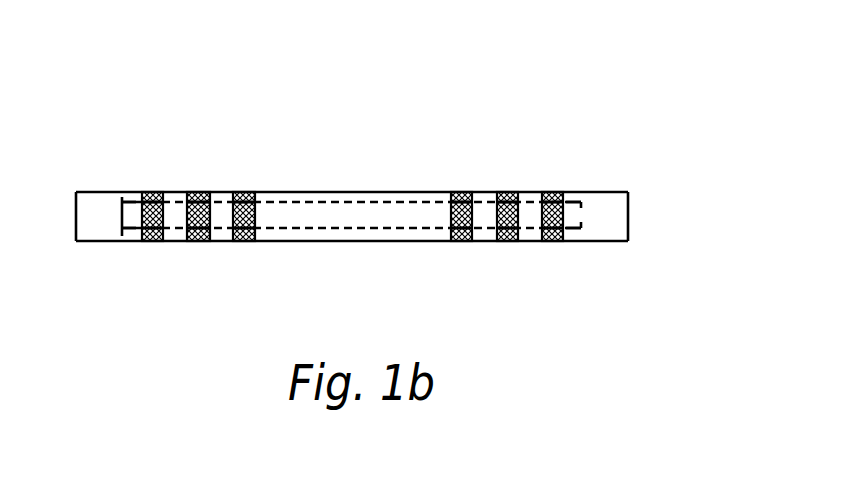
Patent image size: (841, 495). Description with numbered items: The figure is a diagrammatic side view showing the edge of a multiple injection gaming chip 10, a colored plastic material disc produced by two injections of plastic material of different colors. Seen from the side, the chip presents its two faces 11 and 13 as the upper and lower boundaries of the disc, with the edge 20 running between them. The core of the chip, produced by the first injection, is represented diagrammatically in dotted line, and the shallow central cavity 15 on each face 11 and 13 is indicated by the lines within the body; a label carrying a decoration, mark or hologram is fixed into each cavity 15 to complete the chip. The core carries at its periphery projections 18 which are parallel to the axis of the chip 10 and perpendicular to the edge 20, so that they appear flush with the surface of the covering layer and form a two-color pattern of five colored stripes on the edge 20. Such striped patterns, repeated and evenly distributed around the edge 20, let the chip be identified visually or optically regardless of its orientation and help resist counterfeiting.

The multiple injection gaming chip 10 is at (443, 135).
The face 11 is at (110, 192).
The face 13 is at (109, 243).
The shallow central cavity 15 is at (360, 199).
The projections 18 is at (551, 242).
The edge 20 is at (608, 213).